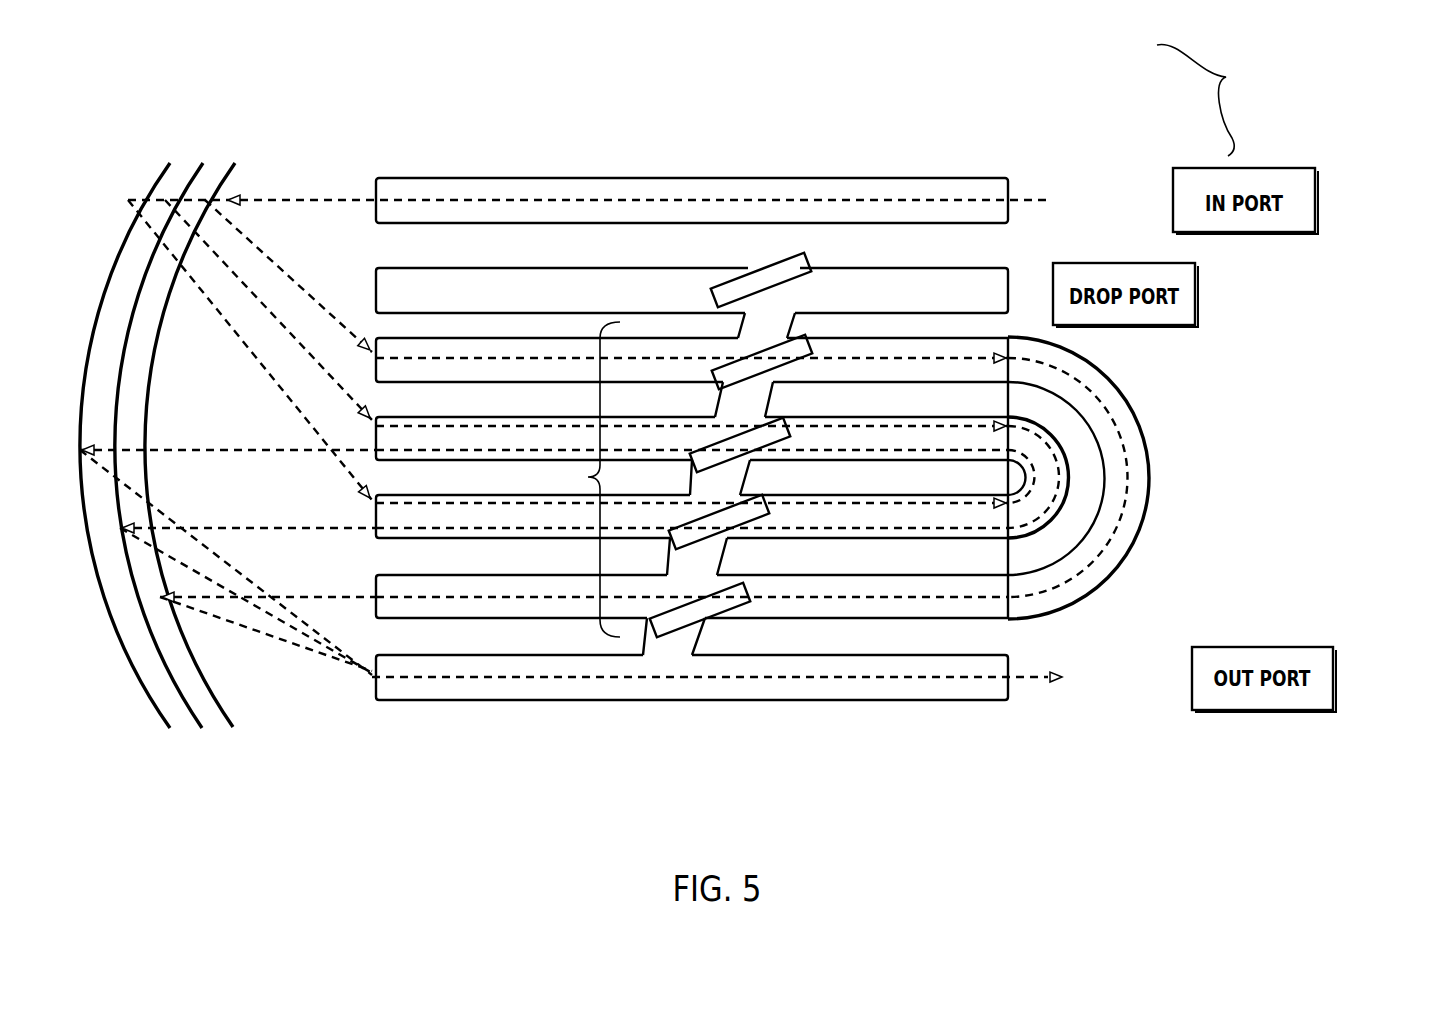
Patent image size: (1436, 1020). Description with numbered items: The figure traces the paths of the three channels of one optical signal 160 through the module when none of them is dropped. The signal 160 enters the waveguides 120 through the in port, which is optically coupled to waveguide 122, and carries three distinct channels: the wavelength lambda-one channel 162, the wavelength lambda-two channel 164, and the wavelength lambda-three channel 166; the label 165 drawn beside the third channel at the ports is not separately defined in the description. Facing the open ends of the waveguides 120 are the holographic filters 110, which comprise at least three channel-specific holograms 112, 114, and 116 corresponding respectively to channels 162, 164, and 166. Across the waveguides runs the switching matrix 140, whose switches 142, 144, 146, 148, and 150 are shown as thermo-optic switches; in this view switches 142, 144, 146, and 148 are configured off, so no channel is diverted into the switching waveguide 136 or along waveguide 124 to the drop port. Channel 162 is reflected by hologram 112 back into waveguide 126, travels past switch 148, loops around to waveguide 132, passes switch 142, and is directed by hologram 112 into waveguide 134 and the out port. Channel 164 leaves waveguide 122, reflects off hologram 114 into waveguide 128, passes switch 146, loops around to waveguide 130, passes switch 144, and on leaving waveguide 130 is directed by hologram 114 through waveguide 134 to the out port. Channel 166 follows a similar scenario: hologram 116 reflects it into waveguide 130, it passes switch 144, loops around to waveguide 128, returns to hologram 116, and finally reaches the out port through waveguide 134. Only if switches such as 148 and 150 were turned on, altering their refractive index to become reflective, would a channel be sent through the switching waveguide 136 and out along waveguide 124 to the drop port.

The holographic filters 110 is at (143, 72).
The holographic filter 112 is at (232, 730).
The holographic filter 114 is at (200, 730).
The holographic filter 116 is at (168, 730).
The waveguides 120 is at (1348, 170).
The waveguide 122 is at (932, 178).
The waveguide 124 is at (932, 268).
The waveguide 126 is at (932, 383).
The waveguide 128 is at (932, 461).
The waveguide 130 is at (932, 539).
The waveguide 132 is at (932, 619).
The waveguide 134 is at (932, 701).
The switching waveguide 136 is at (581, 479).
The switching matrix 140 is at (547, 723).
The switch 142 is at (742, 590).
The switch 144 is at (768, 512).
The switch 146 is at (788, 428).
The switch 148 is at (806, 345).
The switch 150 is at (803, 265).
The optical signal 160 is at (1211, 100).
The wavelength lambda-one channel 162 is at (293, 288).
The wavelength lambda-two channel 164 is at (245, 287).
The third wavelength channel (lambda 3) 165 is at (1153, 183).
The wavelength lambda-three channel 166 is at (188, 272).